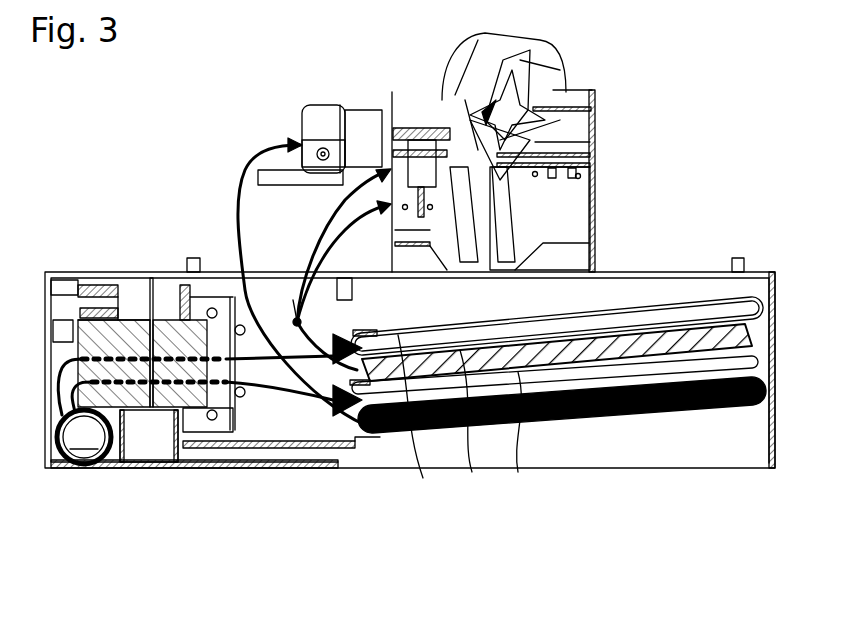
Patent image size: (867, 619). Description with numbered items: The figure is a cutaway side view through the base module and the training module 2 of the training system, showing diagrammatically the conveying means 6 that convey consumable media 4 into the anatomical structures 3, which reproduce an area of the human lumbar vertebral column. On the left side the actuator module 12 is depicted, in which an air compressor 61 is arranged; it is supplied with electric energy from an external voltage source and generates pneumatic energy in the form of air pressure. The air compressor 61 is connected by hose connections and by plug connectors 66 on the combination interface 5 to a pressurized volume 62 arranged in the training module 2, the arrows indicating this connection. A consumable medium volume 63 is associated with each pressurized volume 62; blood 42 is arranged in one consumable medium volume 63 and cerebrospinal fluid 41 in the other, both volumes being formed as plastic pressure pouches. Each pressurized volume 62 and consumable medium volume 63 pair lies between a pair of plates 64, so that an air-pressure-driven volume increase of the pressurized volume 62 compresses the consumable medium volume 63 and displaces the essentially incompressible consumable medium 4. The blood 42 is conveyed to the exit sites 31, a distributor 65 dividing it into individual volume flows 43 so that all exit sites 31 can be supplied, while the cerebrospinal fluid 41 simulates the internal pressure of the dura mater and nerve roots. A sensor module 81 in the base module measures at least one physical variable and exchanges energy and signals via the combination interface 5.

The anatomical structures 3 is at (592, 90).
The exit sites 31 is at (483, 110).
The individual volume flows 43 is at (252, 158).
The distributor 65 is at (293, 305).
The plug connectors 66 is at (128, 296).
The combination interface 5 is at (157, 306).
The pressurized volume 62 is at (620, 323).
The air compressor 61 is at (209, 399).
The sensor module 81 is at (141, 459).
The plates 64 is at (478, 419).
The blood 42 is at (563, 423).
The cerebrospinal fluid 41 is at (683, 410).
The consumable medium 4 is at (565, 400).
The consumable medium volume 63 is at (565, 400).
The actuator module 12 is at (214, 397).
The training module 2 is at (468, 398).
The conveying means 6 is at (412, 420).